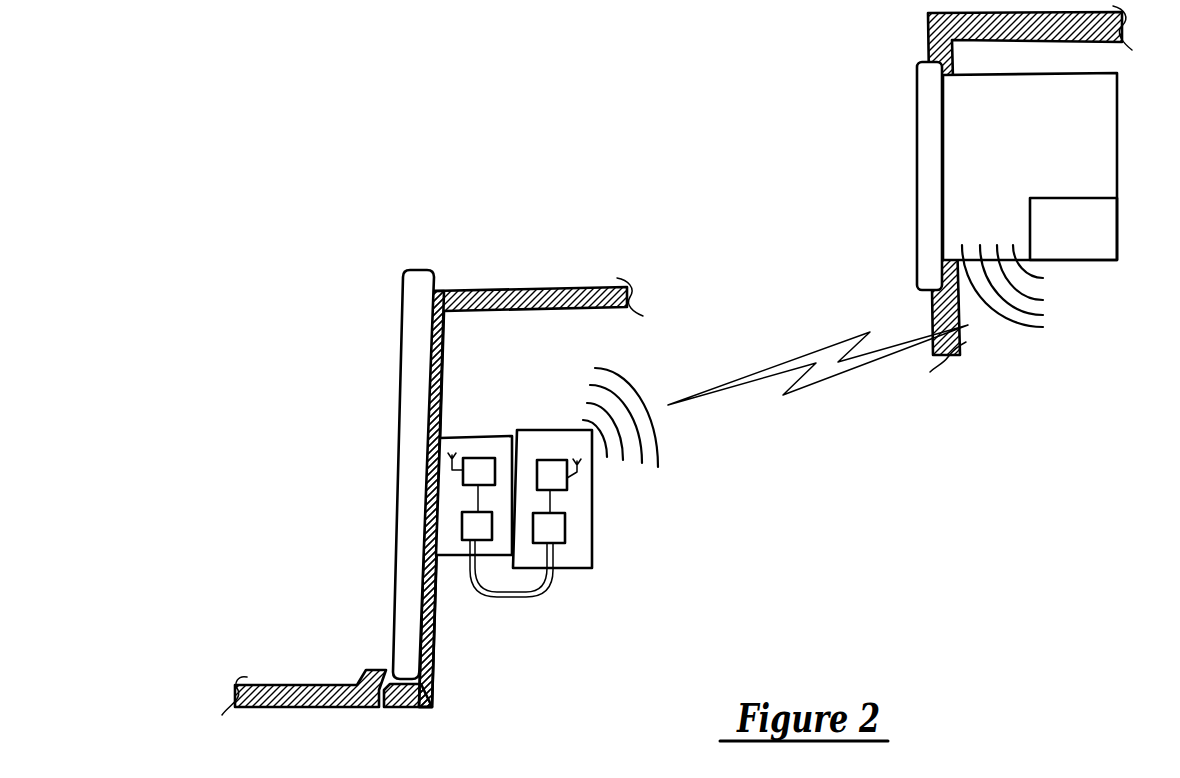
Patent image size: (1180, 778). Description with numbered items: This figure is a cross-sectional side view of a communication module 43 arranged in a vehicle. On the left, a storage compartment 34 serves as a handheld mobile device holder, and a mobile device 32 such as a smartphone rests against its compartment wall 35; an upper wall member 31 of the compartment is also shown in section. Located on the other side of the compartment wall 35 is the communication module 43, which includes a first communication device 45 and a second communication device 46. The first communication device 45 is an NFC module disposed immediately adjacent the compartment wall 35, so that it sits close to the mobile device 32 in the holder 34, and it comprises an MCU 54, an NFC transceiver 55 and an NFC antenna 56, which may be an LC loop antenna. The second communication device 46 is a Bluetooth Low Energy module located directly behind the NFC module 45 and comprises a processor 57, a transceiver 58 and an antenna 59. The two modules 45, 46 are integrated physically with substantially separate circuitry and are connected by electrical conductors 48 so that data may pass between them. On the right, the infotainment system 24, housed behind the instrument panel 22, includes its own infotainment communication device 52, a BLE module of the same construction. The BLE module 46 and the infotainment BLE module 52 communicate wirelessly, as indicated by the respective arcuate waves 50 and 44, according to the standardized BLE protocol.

The instrument panel 22 is at (927, 33).
The infotainment system 24 is at (1120, 124).
The infotainment communication device 52 is at (1092, 197).
The arcuate waves 44 is at (1042, 328).
The ceiling / upper wall member 31 is at (500, 290).
The mobile device 32 is at (402, 347).
The compartment wall 35 is at (443, 393).
The communication module 43 is at (503, 484).
The first communication device 45 is at (430, 469).
The NFC antenna 56 is at (449, 465).
The NFC transceiver 55 is at (463, 481).
The MCU 54 is at (462, 528).
The second communication device 46 is at (586, 501).
The antenna 59 is at (582, 477).
The transceiver 58 is at (565, 500).
The processor 57 is at (563, 545).
The electrical conductors 48 is at (540, 590).
The arcuate waves 50 is at (660, 443).
The storage compartment 34 is at (326, 603).